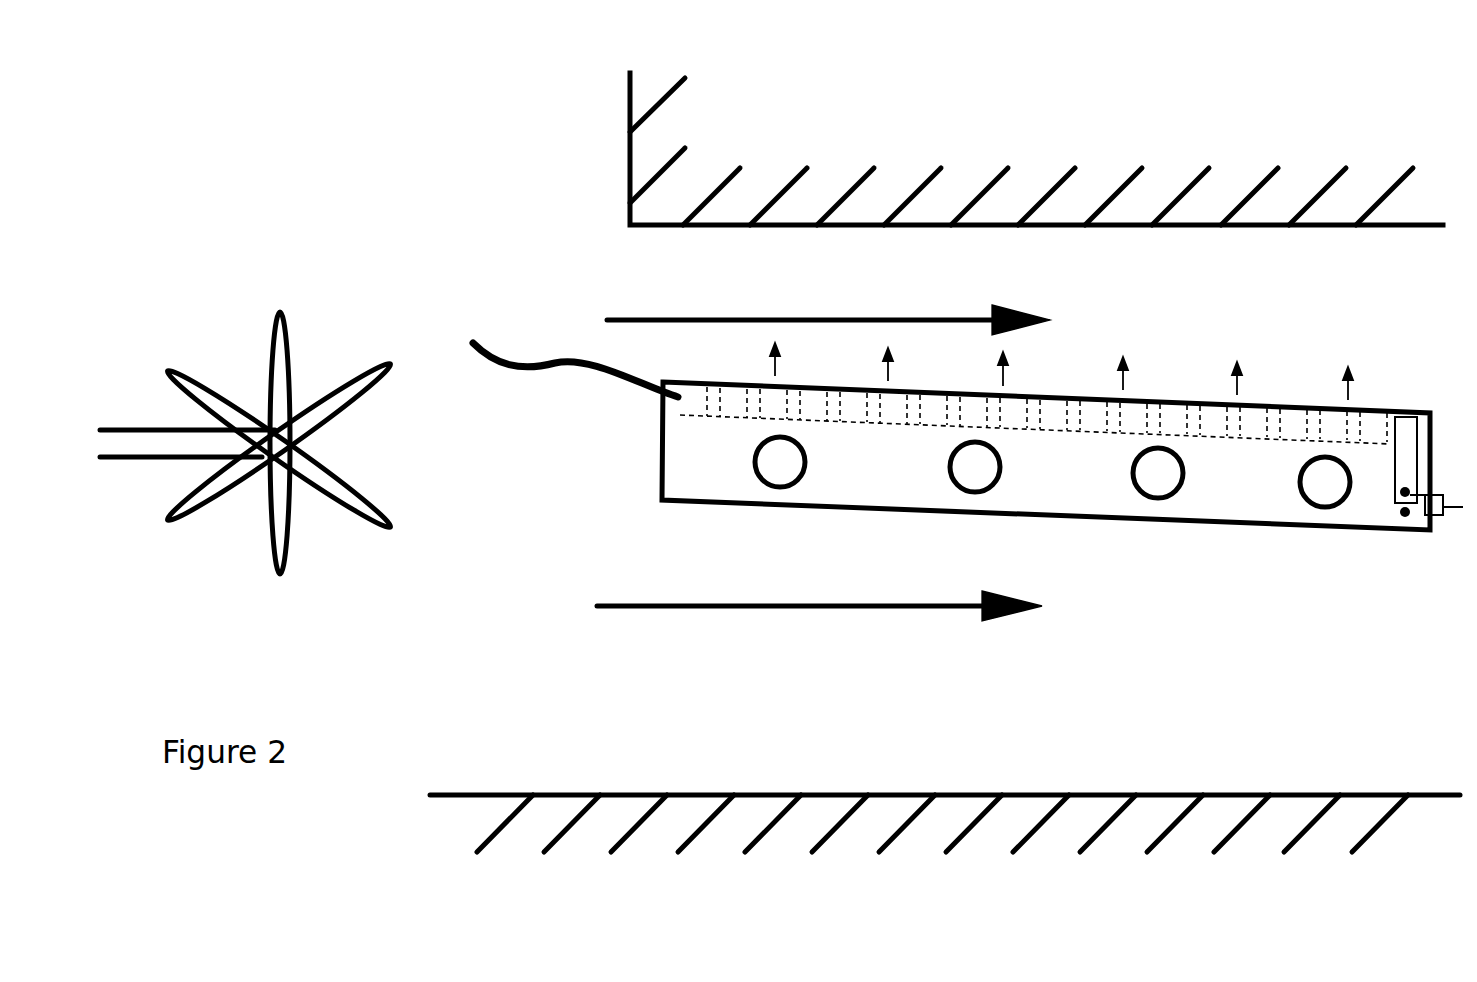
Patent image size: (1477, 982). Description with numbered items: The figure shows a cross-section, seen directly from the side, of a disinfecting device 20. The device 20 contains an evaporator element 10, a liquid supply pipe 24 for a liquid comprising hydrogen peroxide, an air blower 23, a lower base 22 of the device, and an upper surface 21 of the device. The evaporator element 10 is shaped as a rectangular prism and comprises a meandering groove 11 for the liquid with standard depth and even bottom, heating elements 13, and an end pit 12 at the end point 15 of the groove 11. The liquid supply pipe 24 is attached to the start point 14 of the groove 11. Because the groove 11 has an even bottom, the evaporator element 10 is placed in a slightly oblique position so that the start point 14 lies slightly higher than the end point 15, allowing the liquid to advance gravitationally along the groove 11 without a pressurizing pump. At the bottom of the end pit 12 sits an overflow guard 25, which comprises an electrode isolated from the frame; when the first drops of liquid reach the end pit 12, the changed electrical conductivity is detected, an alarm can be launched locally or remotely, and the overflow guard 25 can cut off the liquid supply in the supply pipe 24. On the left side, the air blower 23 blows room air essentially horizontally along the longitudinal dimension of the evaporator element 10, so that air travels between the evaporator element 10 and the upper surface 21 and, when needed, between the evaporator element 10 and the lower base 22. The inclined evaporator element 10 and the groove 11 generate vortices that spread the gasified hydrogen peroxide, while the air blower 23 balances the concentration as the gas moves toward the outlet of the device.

The evaporator element 10 is at (663, 478).
The groove 11 is at (1212, 433).
The end pit 12 is at (1410, 450).
The heating elements 13 is at (985, 493).
The start point 14 is at (688, 410).
The end point 15 is at (1395, 418).
The disinfecting device 20 is at (268, 130).
The upper surface 21 is at (640, 163).
The lower base 22 is at (1292, 803).
The air blower 23 is at (290, 305).
The liquid supply pipe 24 is at (520, 362).
The overflow guard 25 is at (1463, 507).